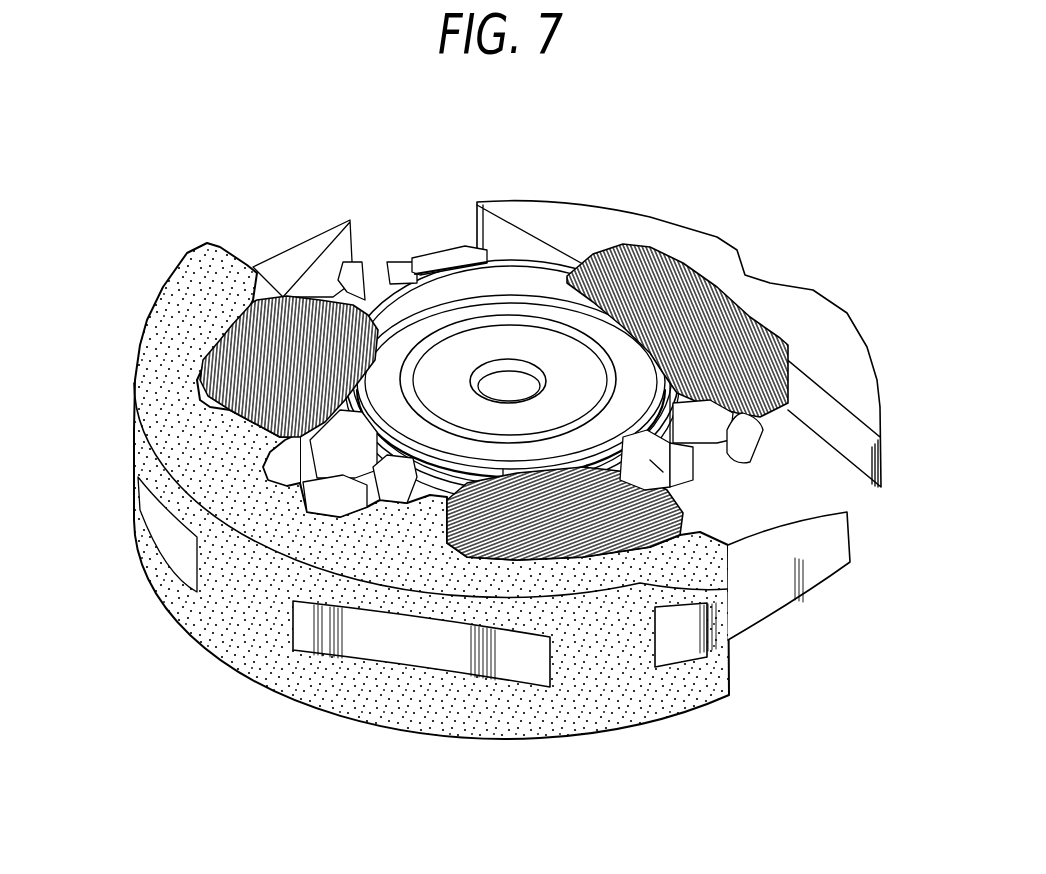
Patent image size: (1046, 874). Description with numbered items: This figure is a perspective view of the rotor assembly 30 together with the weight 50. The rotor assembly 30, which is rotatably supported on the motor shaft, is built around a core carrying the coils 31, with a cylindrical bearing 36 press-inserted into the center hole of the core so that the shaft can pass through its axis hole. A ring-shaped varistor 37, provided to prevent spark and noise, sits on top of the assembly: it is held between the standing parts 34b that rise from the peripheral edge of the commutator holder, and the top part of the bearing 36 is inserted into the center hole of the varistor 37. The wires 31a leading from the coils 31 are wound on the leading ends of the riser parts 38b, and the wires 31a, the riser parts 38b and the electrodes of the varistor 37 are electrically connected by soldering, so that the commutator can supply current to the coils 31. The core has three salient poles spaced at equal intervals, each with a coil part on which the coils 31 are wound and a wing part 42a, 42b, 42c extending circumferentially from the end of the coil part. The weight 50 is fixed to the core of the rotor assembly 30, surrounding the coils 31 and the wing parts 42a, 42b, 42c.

The rotor assembly 30 is at (783, 240).
The coils 31 is at (627, 250).
The wires 31a is at (386, 290).
The standing parts 34b is at (673, 460).
The bearing 36 is at (457, 355).
The varistor 37 is at (507, 305).
The riser parts 38b is at (440, 252).
The wing part 42a is at (172, 538).
The wing part 42b is at (400, 665).
The wing part 42c is at (845, 308).
The weight 50 is at (610, 743).